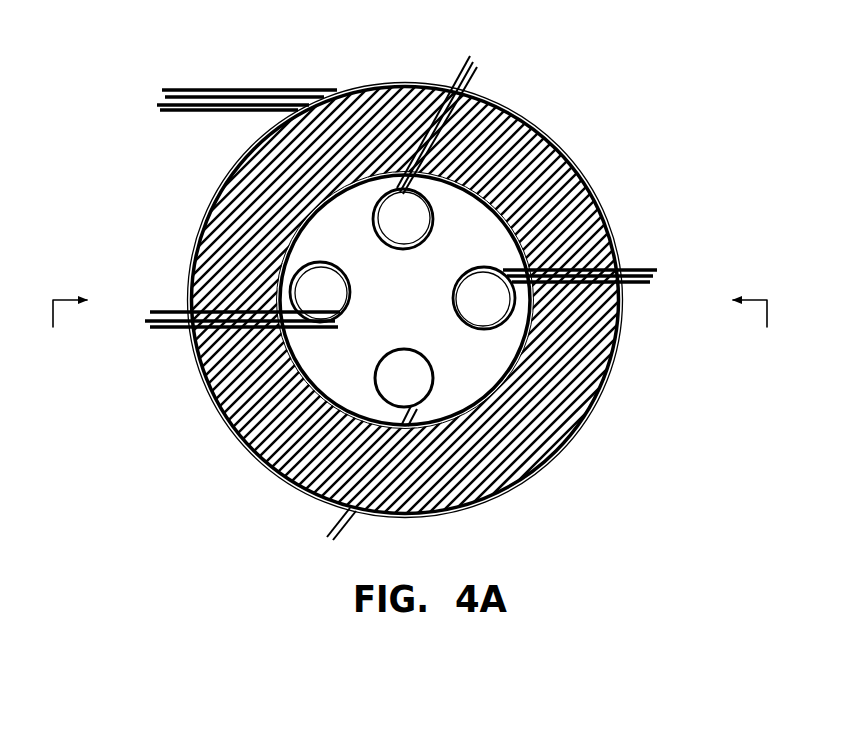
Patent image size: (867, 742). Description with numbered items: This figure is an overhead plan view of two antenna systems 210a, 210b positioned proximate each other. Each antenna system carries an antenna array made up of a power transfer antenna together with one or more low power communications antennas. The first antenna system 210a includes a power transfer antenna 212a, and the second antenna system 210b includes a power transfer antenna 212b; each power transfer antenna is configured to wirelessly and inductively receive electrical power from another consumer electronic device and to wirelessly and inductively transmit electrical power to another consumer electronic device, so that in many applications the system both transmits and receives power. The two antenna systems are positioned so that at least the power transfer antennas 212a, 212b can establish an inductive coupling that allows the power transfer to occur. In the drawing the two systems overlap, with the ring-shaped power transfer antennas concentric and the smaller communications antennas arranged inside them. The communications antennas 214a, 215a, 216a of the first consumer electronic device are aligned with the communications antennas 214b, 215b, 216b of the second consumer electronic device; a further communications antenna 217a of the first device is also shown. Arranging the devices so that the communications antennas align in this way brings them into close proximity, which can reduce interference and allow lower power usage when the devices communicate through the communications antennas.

The antenna system 210a is at (320, 61).
The antenna system 210b is at (600, 107).
The power transfer antenna 212a is at (241, 155).
The power transfer antenna 212b is at (559, 453).
The communications antenna 214a is at (377, 212).
The communications antenna 214b is at (433, 231).
The communications antenna 215a is at (478, 265).
The communications antenna 215b is at (478, 335).
The communications antenna 216a is at (293, 288).
The communications antenna 216b is at (338, 316).
The communications antenna 217a is at (445, 382).